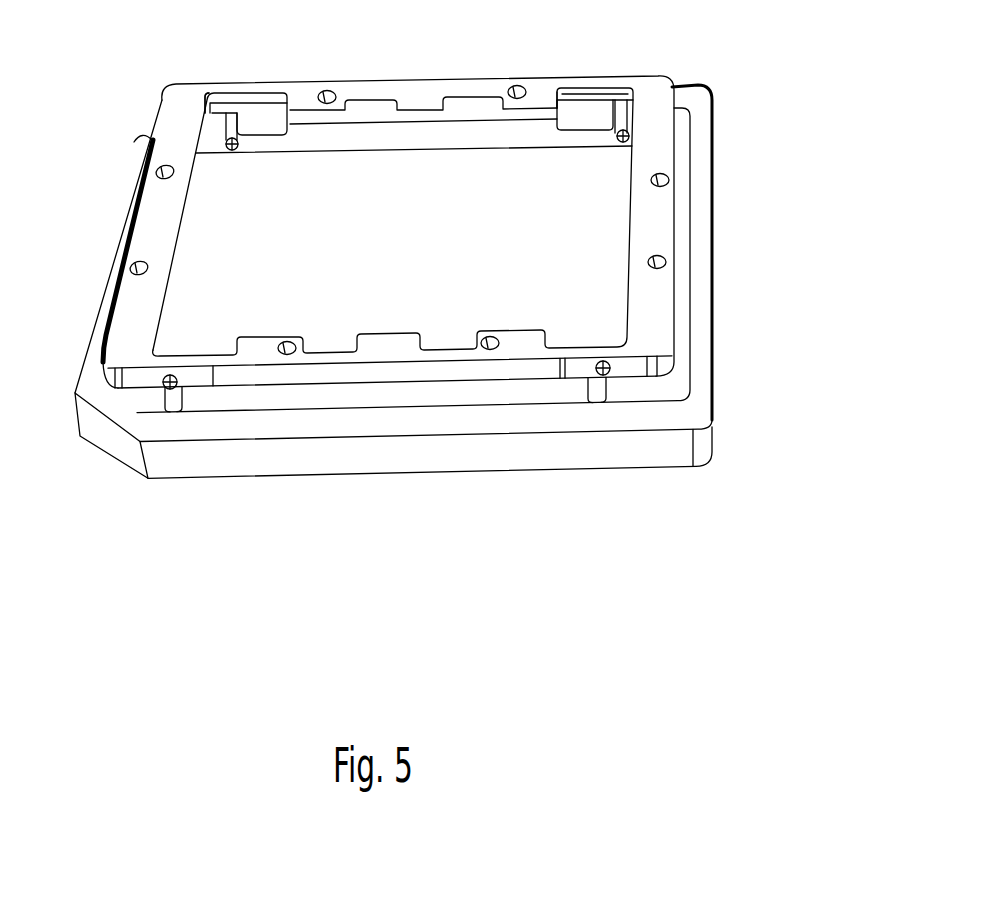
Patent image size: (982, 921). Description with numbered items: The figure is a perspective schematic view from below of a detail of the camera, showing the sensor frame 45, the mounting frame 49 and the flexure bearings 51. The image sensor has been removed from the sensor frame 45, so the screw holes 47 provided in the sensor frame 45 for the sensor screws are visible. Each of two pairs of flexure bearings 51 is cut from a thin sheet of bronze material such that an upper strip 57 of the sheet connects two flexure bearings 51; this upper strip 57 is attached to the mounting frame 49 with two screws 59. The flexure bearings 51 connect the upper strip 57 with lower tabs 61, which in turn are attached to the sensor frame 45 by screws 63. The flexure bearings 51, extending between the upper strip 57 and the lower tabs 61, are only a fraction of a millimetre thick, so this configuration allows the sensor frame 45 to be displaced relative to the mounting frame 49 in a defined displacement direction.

The sensor frame 45 is at (668, 74).
The screw holes 47 is at (331, 88).
The mounting frame 49 is at (712, 428).
The flexure bearings 51 is at (243, 108).
The upper strip 57 is at (317, 153).
The screws 59 is at (235, 151).
The lower tabs 61 is at (137, 402).
The screws 63 is at (175, 373).